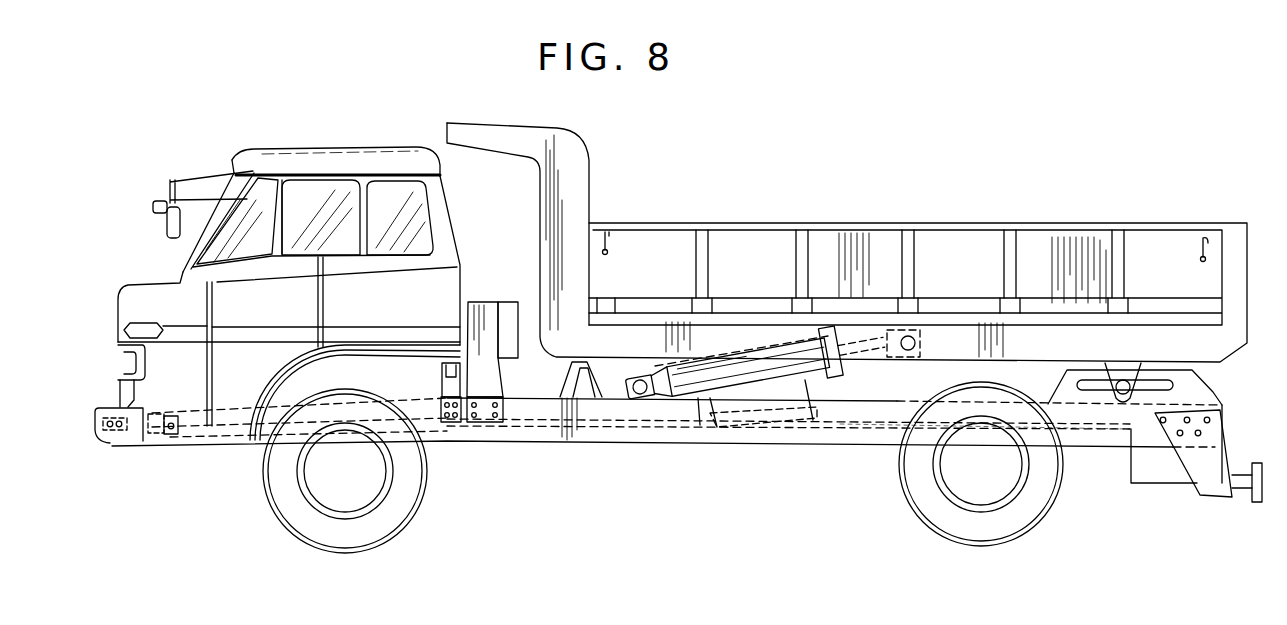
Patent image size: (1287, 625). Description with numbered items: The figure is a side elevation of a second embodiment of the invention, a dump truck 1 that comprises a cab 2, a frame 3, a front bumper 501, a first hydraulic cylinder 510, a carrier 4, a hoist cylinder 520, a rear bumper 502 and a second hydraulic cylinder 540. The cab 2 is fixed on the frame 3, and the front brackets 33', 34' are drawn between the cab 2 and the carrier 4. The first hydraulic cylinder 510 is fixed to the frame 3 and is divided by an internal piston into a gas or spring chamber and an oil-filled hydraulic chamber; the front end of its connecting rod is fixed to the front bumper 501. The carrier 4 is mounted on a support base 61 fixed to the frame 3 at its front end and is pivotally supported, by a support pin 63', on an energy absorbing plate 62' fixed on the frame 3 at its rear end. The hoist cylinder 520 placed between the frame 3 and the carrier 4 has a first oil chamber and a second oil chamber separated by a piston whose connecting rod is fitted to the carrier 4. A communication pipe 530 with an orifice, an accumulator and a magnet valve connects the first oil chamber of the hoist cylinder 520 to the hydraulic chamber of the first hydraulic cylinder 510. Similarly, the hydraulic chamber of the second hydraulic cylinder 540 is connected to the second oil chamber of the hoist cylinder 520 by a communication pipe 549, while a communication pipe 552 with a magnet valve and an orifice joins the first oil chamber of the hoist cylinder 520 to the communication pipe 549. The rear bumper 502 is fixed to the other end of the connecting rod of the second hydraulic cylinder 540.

The dump truck 1 is at (688, 174).
The cab 2 is at (370, 150).
The frame 3 is at (613, 433).
The carrier 4 is at (847, 222).
The front mounting bracket 33' is at (487, 323).
The front mounting bracket 34' is at (515, 304).
The support base 61 is at (563, 380).
The energy absorbing plate 62' is at (1159, 426).
The support pin 63' is at (1186, 382).
The front bumper 501 is at (97, 441).
The rear bumper 502 is at (1262, 502).
The first hydraulic cylinder 510 is at (158, 441).
The hoist cylinder 520 is at (699, 400).
The communication pipe 530 is at (437, 436).
The second hydraulic cylinder 540 is at (1236, 497).
The communication pipe 549 is at (850, 427).
The communication pipe 552 is at (750, 418).